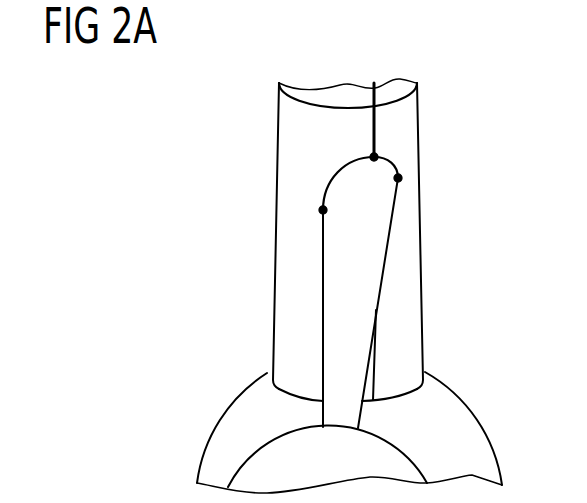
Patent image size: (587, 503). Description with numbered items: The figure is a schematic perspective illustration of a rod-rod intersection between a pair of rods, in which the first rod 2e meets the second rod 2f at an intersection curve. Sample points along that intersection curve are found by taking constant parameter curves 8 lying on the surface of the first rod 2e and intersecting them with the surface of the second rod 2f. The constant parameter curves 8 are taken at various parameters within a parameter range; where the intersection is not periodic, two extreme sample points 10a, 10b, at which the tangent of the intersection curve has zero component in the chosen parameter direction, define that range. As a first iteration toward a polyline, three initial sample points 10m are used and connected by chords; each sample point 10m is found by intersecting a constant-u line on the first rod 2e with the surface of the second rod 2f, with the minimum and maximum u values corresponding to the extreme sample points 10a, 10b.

The first rod 2e is at (280, 232).
The second rod 2f is at (380, 240).
The constant parameter curve 8 is at (374, 83).
The extreme sample point 10a is at (323, 210).
The extreme sample point 10b is at (400, 178).
The initial sample point 10m is at (376, 157).